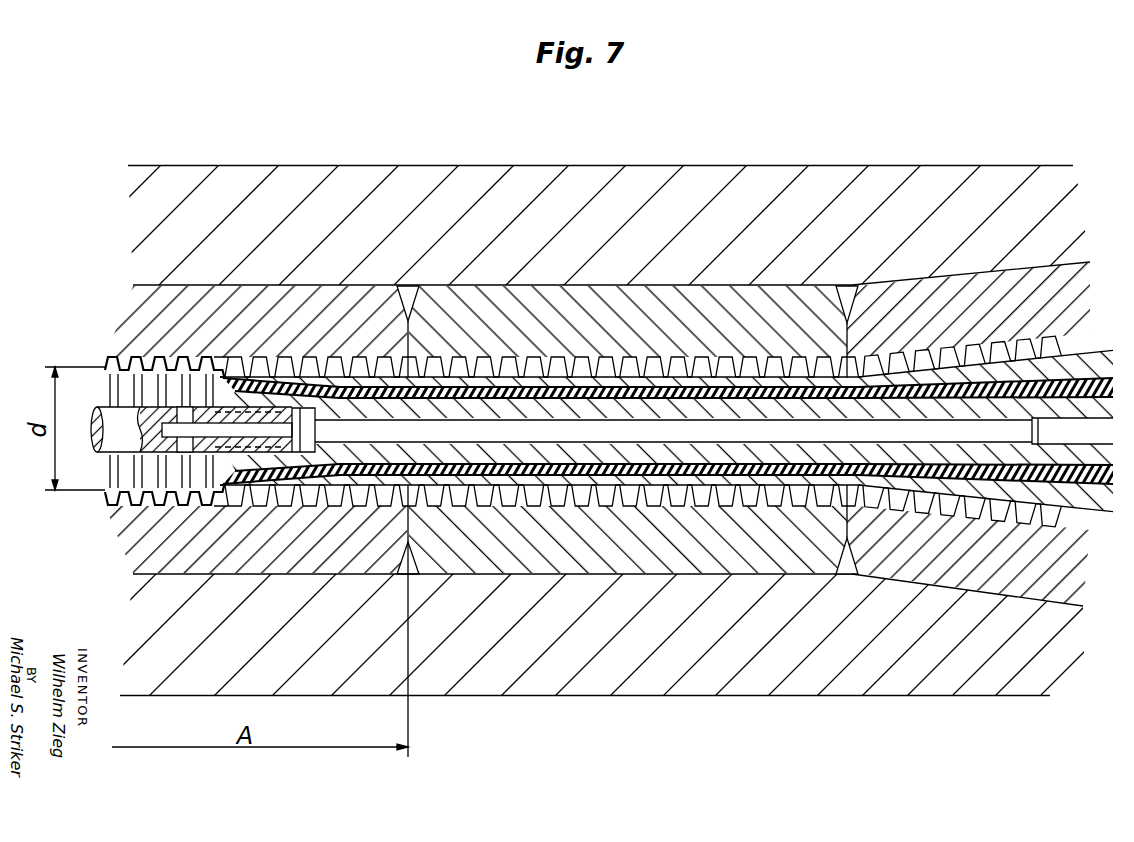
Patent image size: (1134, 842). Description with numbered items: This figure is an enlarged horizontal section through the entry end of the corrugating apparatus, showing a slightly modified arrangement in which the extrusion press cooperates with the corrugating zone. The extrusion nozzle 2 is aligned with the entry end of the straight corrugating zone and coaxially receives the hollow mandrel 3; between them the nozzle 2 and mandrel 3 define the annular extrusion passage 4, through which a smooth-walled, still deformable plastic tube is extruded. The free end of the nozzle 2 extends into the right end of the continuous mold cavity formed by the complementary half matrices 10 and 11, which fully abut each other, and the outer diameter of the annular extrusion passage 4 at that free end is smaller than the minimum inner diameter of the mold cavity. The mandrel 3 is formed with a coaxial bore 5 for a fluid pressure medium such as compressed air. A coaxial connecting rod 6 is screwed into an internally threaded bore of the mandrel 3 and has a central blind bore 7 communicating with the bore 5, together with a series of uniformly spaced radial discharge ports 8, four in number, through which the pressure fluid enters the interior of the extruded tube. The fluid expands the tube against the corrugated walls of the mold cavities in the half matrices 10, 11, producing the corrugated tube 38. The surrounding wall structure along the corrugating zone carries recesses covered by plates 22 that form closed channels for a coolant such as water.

The plate 22 is at (286, 190).
The half matrix 10 is at (193, 297).
The half matrix 11 is at (298, 540).
The extrusion nozzle 2 is at (552, 387).
The hollow mandrel 3 is at (676, 413).
The annular extrusion passage 4 is at (797, 285).
The coaxial bore 5 is at (697, 432).
The connecting rod 6 is at (72, 493).
The central blind bore 7 is at (222, 430).
The radial discharge ports 8 is at (132, 490).
The corrugated tube 38 is at (110, 357).